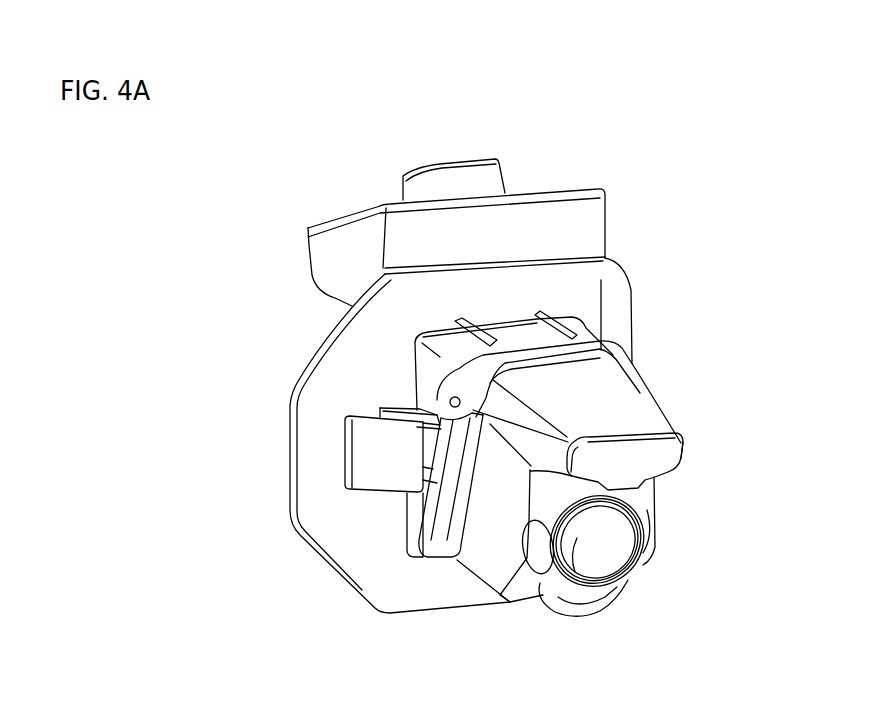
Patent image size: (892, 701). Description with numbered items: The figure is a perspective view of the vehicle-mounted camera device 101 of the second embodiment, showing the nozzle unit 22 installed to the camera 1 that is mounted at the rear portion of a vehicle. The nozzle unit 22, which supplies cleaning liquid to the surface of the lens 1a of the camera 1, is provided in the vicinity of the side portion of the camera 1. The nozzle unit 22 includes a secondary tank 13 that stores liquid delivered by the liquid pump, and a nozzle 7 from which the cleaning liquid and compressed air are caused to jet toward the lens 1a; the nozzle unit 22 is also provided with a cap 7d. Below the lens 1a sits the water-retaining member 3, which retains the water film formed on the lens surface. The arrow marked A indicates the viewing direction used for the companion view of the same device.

The vehicle-mounted camera device 101 is at (332, 203).
The nozzle unit 22 is at (703, 257).
The secondary tank 13 is at (588, 225).
The nozzle 7 is at (643, 410).
The cap 7d is at (665, 460).
The camera 1 is at (484, 566).
The lens 1a is at (617, 547).
The water-retaining member 3 is at (587, 612).